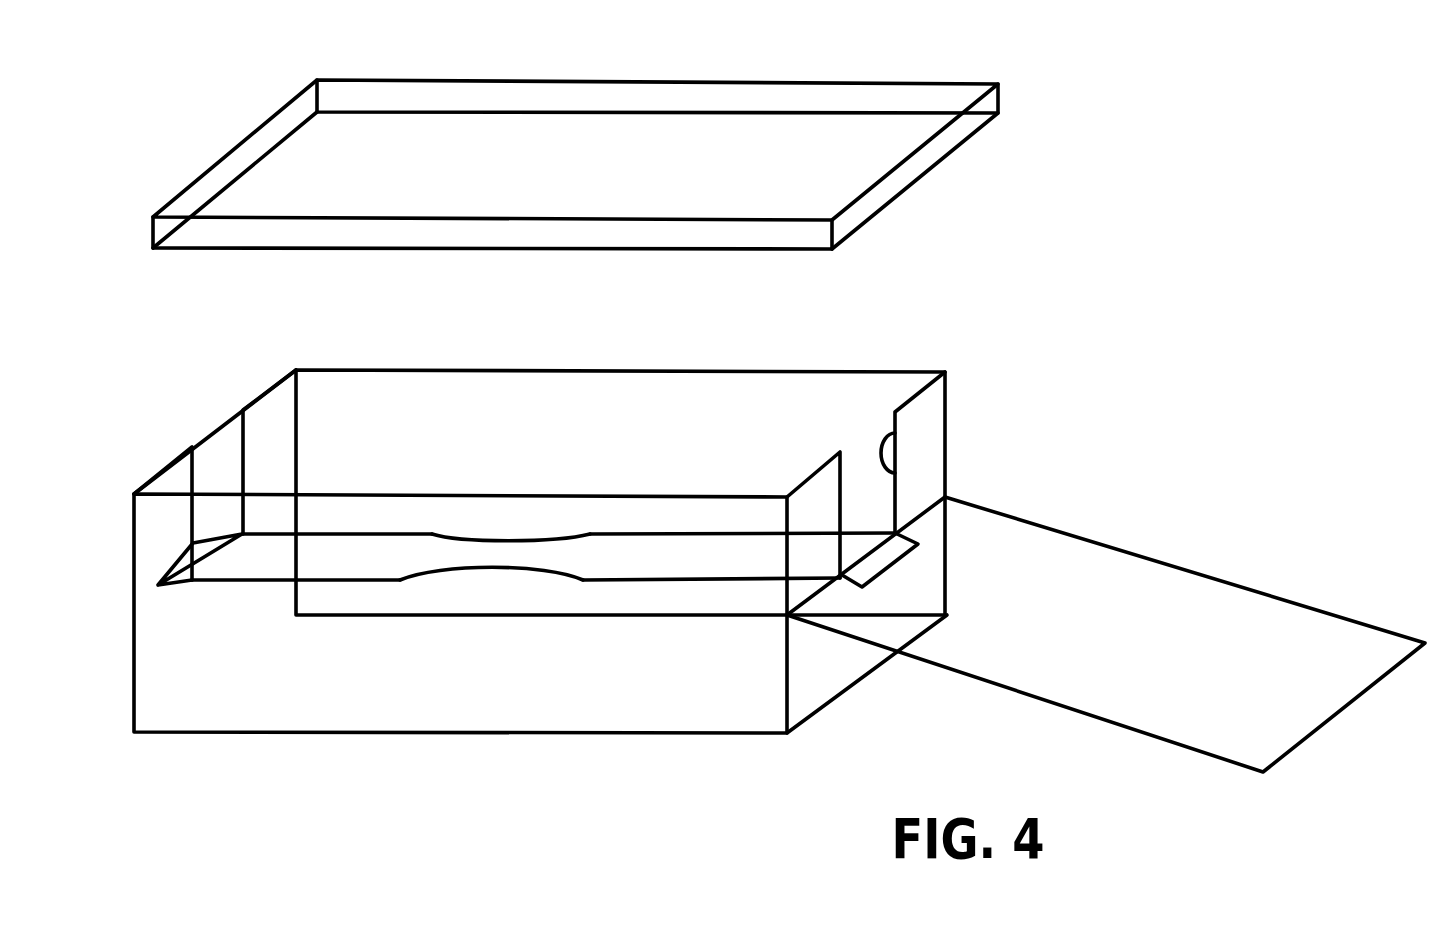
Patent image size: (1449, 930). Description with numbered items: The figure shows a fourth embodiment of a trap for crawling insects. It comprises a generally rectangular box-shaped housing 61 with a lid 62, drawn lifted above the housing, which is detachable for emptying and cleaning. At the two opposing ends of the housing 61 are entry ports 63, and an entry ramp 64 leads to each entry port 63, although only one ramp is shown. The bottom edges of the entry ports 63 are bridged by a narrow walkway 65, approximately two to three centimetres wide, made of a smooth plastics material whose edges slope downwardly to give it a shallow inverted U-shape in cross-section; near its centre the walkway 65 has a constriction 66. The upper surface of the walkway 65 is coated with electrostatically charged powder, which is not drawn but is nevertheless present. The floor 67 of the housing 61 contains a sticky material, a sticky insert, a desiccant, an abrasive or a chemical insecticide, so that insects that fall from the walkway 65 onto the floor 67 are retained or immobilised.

The housing 61 is at (883, 385).
The lid 62 is at (577, 135).
The entry ports 63 is at (241, 443).
The entry ramp 64 is at (1063, 580).
The walkway 65 is at (330, 560).
The constriction 66 is at (502, 553).
The floor 67 is at (675, 702).